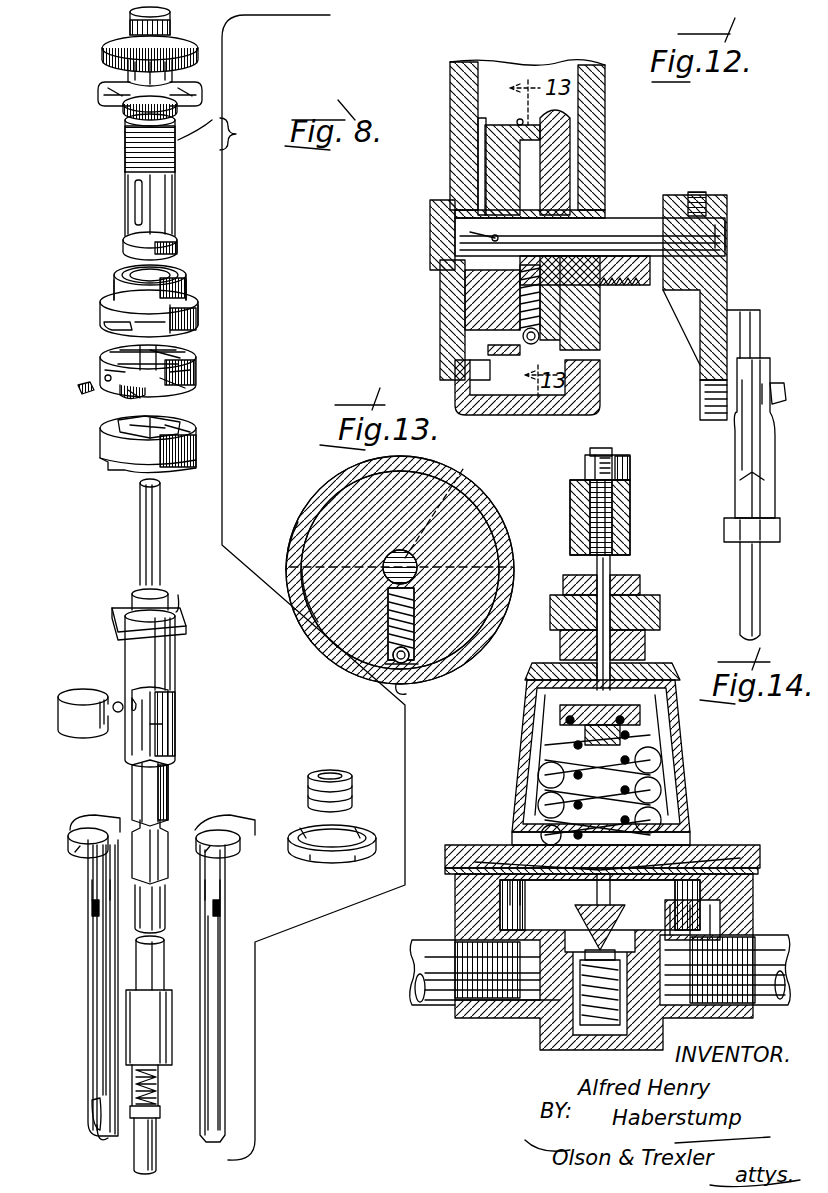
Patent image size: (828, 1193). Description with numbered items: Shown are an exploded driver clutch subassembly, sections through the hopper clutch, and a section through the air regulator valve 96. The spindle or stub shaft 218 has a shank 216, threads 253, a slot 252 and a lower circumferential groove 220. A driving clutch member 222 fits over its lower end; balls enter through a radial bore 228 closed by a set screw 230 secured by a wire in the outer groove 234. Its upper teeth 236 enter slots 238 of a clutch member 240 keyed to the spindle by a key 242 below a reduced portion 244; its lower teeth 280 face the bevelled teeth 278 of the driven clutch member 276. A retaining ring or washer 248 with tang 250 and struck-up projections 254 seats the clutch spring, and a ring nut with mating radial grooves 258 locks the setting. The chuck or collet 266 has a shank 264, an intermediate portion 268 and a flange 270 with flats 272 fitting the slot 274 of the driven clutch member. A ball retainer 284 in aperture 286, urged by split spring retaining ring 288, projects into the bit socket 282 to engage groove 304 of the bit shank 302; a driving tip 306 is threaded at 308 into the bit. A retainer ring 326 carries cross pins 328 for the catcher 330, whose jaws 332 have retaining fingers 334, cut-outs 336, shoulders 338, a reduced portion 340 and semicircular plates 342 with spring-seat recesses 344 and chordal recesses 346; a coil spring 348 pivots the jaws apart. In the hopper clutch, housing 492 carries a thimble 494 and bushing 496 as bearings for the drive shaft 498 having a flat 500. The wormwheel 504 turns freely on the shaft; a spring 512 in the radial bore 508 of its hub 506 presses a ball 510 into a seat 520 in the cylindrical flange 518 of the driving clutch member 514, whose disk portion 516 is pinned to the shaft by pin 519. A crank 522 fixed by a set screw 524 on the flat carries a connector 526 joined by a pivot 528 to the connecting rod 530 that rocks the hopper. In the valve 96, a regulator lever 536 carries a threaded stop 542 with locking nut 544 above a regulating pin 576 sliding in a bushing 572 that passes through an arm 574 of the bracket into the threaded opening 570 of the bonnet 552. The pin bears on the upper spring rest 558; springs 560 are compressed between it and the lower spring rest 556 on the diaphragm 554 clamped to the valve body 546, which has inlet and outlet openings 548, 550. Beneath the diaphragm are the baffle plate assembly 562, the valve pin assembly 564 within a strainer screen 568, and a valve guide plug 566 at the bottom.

In FIG. 8, the shank 216 is at (175, 22).
In FIG. 8, the spindle or stub shaft 218 is at (177, 180).
In FIG. 8, the circumferential groove 220 is at (180, 240).
In FIG. 8, the driving clutch member 222 is at (180, 396).
In FIG. 8, the radial bore 228 is at (100, 370).
In FIG. 8, the set screw 230 is at (74, 393).
In FIG. 8, the outer circumferential groove 234 is at (190, 380).
In FIG. 8, the teeth 236 is at (185, 352).
In FIG. 8, the slots or grooves 238 is at (105, 315).
In FIG. 8, the clutch member 240 is at (190, 290).
In FIG. 8, the key 242 is at (113, 273).
In FIG. 8, the upper reduced diameter portion 244 is at (190, 270).
In FIG. 8, the retaining ring or washer 248 is at (205, 85).
In FIG. 8, the tang 250 is at (125, 70).
In FIG. 8, the slot 252 is at (125, 135).
In FIG. 8, the threads 253 is at (230, 129).
In FIG. 8, the radial projections 254 is at (252, 92).
In FIG. 8, the radial grooves 258 is at (245, 45).
In FIG. 8, the shank 264 is at (140, 512).
In FIG. 8, the chuck or collet 266 is at (175, 655).
In FIG. 8, the portion of intermediate diameter 268 is at (180, 598).
In FIG. 8, the flange 270 is at (118, 622).
In FIG. 8, the flats 272 is at (172, 612).
In FIG. 8, the slot or groove 274 is at (115, 458).
In FIG. 8, the driven clutch member 276 is at (195, 432).
In FIG. 8, the bevelled teeth 278 is at (117, 440).
In FIG. 8, the teeth 280 is at (128, 398).
In FIG. 8, the bit receiving socket 282 is at (165, 723).
In FIG. 8, the ball retainer 284 is at (116, 714).
In FIG. 8, the aperture 286 is at (135, 730).
In FIG. 8, the split spring retaining ring 288 is at (80, 697).
In FIG. 8, the shank portion 302 is at (150, 775).
In FIG. 8, the circumferential groove 304 is at (160, 824).
In FIG. 8, the driving tip 306 is at (160, 1160).
In FIG. 8, the screw thread 308 is at (165, 1080).
In FIG. 8, the retainer ring 326 is at (372, 850).
In FIG. 8, the cross pins 328 is at (355, 830).
In FIG. 8, the catcher 330 is at (234, 966).
In FIG. 8, the jaws 332 is at (215, 985).
In FIG. 8, the retaining fingers 334 is at (108, 1140).
In FIG. 8, the cut-outs 336 is at (210, 1122).
In FIG. 8, the shoulders 338 is at (218, 906).
In FIG. 8, the portion of reduced diameter 340 is at (212, 890).
In FIG. 8, the semicircular plates 342 is at (238, 832).
In FIG. 8, the semicircular recesses 344 is at (222, 832).
In FIG. 8, the chordal recesses 346 is at (212, 853).
In FIG. 8, the coil spring 348 is at (352, 796).
In FIG. 12, the hopper clutch housing 492 is at (620, 74).
In FIG. 12, the thimble 494 is at (455, 212).
In FIG. 12, the bushing 496 is at (635, 280).
In FIG. 12, the hopper drive shaft 498 is at (628, 248).
In FIG. 13, the hopper drive shaft 498 is at (394, 564).
In FIG. 12, the flat 500 is at (700, 232).
In FIG. 12, the wormwheel 504 is at (570, 150).
In FIG. 13, the wormwheel 504 is at (292, 610).
In FIG. 12, the hub 506 is at (525, 165).
In FIG. 13, the hub 506 is at (440, 478).
In FIG. 12, the radial bore 508 is at (545, 310).
In FIG. 13, the radial bore 508 is at (415, 625).
In FIG. 12, the ball 510 is at (488, 348).
In FIG. 13, the ball 510 is at (405, 672).
In FIG. 12, the spring 512 is at (542, 338).
In FIG. 13, the spring 512 is at (410, 636).
In FIG. 12, the driving clutch member 514 is at (479, 182).
In FIG. 13, the driving clutch member 514 is at (515, 514).
In FIG. 12, the disk portion 516 is at (450, 282).
In FIG. 12, the cylindrical flange 518 is at (519, 120).
In FIG. 13, the cylindrical flange 518 is at (291, 545).
In FIG. 12, the pin 519 is at (490, 240).
In FIG. 13, the pin 519 is at (468, 470).
In FIG. 12, the recess or ball seat 520 is at (470, 378).
In FIG. 13, the recess or ball seat 520 is at (404, 684).
In FIG. 12, the crank shaft 522 is at (728, 300).
In FIG. 12, the set screw 524 is at (700, 196).
In FIG. 12, the connector 526 is at (738, 452).
In FIG. 12, the pivot connection 528 is at (776, 384).
In FIG. 12, the connecting rod 530 is at (758, 628).
In FIG. 14, the air regulator valve 96 is at (712, 802).
In FIG. 14, the regulator lever 536 is at (628, 496).
In FIG. 14, the stop 542 is at (614, 525).
In FIG. 14, the locking nut 544 is at (625, 467).
In FIG. 14, the valve body 546 is at (760, 885).
In FIG. 14, the inlet opening 548 is at (490, 1002).
In FIG. 14, the outlet opening 550 is at (710, 1007).
In FIG. 14, the bonnet 552 is at (690, 735).
In FIG. 14, the diaphragm 554 is at (690, 862).
In FIG. 14, the lower spring rest 556 is at (690, 838).
In FIG. 14, the upper spring rest 558 is at (668, 676).
In FIG. 14, the springs 560 is at (560, 760).
In FIG. 14, the baffle plate assembly 562 is at (458, 888).
In FIG. 14, the valve pin assembly 564 is at (705, 925).
In FIG. 14, the valve guide plug 566 is at (570, 1055).
In FIG. 14, the strainer screen 568 is at (540, 1035).
In FIG. 14, the threaded axial opening 570 is at (645, 648).
In FIG. 14, the bushing 572 is at (600, 584).
In FIG. 14, the arm 574 is at (640, 612).
In FIG. 14, the regulating pin 576 is at (612, 580).